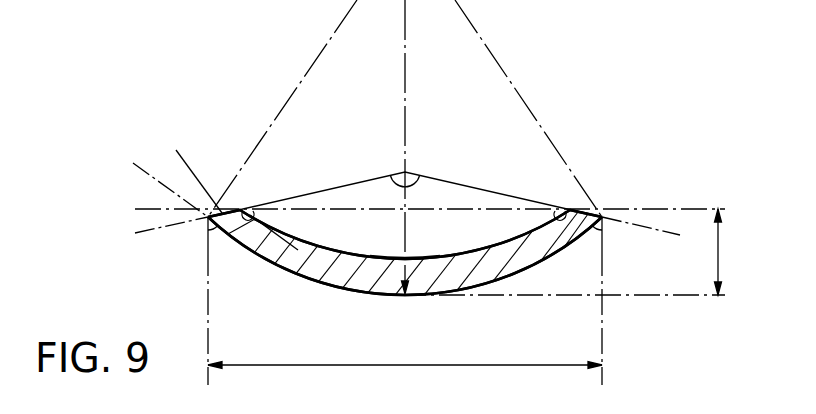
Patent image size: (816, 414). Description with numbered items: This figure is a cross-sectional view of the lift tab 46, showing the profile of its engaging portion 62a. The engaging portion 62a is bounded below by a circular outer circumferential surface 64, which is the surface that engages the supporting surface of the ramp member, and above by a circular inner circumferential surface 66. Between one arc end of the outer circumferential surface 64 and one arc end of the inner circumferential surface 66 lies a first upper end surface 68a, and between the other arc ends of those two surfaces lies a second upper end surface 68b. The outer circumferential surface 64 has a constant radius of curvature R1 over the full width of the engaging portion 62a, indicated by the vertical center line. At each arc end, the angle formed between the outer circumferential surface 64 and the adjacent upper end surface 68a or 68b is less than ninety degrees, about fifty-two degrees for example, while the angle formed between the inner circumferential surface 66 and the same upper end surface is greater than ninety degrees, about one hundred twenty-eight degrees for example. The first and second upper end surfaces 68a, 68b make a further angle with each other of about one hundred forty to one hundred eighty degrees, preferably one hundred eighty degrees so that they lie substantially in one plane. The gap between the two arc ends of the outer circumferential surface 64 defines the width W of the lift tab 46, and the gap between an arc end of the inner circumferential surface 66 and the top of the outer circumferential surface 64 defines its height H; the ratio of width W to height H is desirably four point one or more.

The lift tab 46 is at (284, 277).
The engaging portion 62a is at (530, 234).
The outer circumferential surface 64 is at (486, 287).
The inner circumferential surface 66 is at (438, 257).
The first upper end surface 68a is at (243, 208).
The second upper end surface 68b is at (576, 208).
The radius of curvature R1 is at (408, 77).
The height H is at (729, 252).
The width W is at (405, 379).